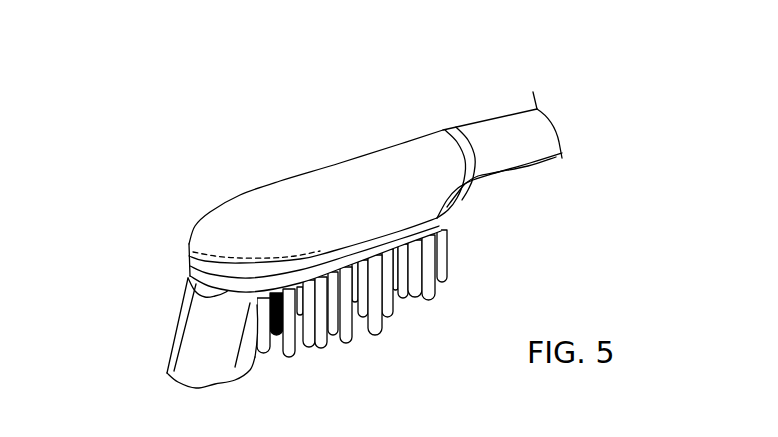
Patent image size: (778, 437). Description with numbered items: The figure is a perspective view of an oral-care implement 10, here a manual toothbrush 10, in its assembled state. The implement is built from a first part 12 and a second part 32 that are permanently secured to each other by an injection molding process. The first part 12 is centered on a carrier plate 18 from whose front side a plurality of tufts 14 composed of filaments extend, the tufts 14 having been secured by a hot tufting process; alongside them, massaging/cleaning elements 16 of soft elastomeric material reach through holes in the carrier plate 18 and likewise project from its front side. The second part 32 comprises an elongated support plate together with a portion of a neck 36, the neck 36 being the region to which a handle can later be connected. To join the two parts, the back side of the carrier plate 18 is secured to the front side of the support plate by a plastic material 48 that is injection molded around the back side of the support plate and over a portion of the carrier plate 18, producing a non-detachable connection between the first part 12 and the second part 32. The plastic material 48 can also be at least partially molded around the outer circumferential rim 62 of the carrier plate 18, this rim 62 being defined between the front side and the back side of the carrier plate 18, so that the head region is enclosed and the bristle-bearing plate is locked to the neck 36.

The oral-care implement 10 is at (273, 174).
The first part 12 is at (304, 346).
The tufts 14 is at (437, 261).
The massaging/cleaning elements 16 is at (373, 333).
The carrier plate 18 is at (190, 307).
The second part 32 is at (458, 127).
The neck 36 is at (517, 130).
The plastic material 48 is at (232, 234).
The outer circumferential rim 62 is at (188, 260).